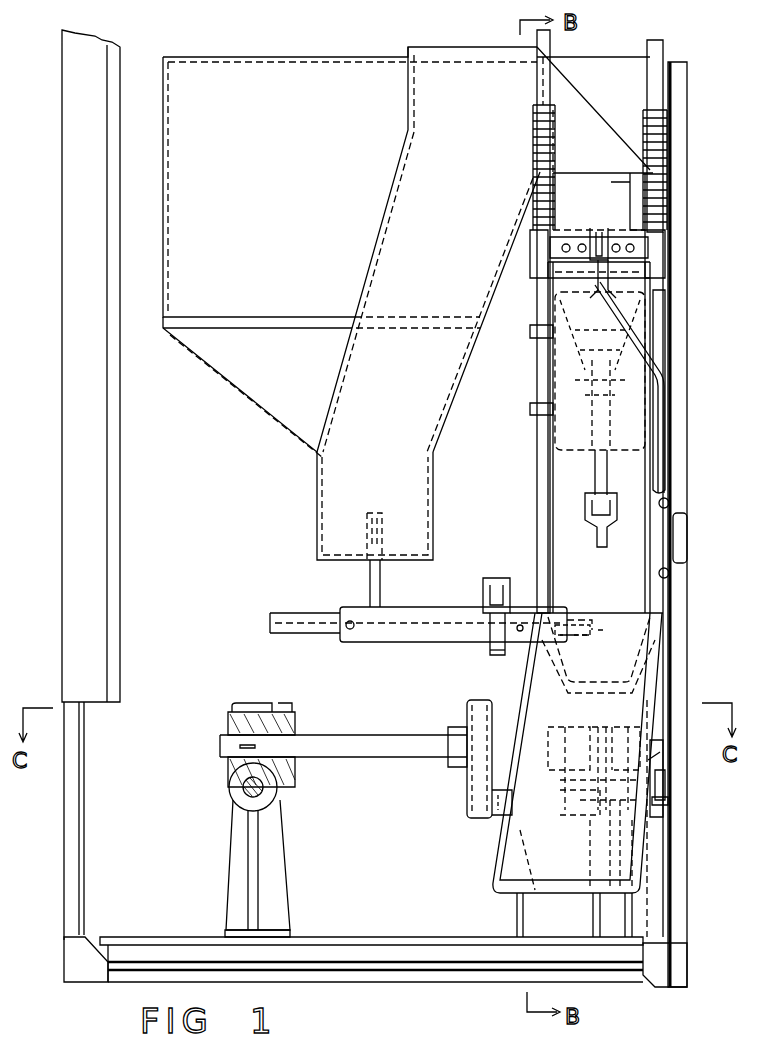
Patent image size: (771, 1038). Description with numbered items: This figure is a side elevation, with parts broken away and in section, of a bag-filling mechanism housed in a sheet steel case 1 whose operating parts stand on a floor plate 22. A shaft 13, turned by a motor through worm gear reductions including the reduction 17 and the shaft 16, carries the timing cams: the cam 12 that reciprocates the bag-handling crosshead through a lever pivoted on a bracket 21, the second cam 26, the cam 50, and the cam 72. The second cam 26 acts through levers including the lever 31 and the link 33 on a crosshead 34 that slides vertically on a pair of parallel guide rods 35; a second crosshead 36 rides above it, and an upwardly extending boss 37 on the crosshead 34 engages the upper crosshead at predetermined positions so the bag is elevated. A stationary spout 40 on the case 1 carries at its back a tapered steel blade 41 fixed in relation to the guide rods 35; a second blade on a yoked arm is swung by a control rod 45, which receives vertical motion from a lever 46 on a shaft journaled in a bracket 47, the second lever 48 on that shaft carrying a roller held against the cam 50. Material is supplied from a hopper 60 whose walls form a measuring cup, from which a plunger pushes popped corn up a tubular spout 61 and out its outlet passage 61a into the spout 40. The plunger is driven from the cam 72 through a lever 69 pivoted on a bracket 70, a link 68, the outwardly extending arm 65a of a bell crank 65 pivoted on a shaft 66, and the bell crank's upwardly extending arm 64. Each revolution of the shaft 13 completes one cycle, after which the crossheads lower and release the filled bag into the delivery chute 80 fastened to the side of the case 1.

The case 1 is at (82, 510).
The cam 12 is at (625, 727).
The shaft 13 is at (398, 748).
The shaft 16 is at (268, 794).
The worm gear reduction 17 is at (243, 786).
The bracket 21 is at (655, 915).
The floor plate 22 is at (395, 945).
The second cam 26 is at (616, 727).
The lever 31 is at (609, 542).
The link 33 is at (595, 478).
The crosshead 34 is at (530, 333).
The guide rods 35 is at (540, 552).
The second crosshead 36 is at (535, 280).
The boss 37 is at (600, 371).
The stationary spout 40 is at (603, 201).
The steel blade 41 is at (630, 318).
The control rod 45 is at (657, 472).
The lever 46 is at (665, 803).
The bracket 47 is at (596, 867).
The second lever 48 is at (572, 815).
The cam 50 is at (585, 727).
The hopper 60 is at (350, 303).
The tubular spout 61 is at (428, 249).
The outlet passage 61a is at (593, 109).
The arm 64 is at (380, 588).
The bell crank 65 is at (418, 612).
The arm 65a is at (498, 575).
The shaft 66 is at (290, 622).
The link 68 is at (492, 655).
The lever 69 is at (510, 790).
The bracket 70 is at (528, 860).
The cam 72 is at (478, 700).
The delivery chute 80 is at (495, 855).